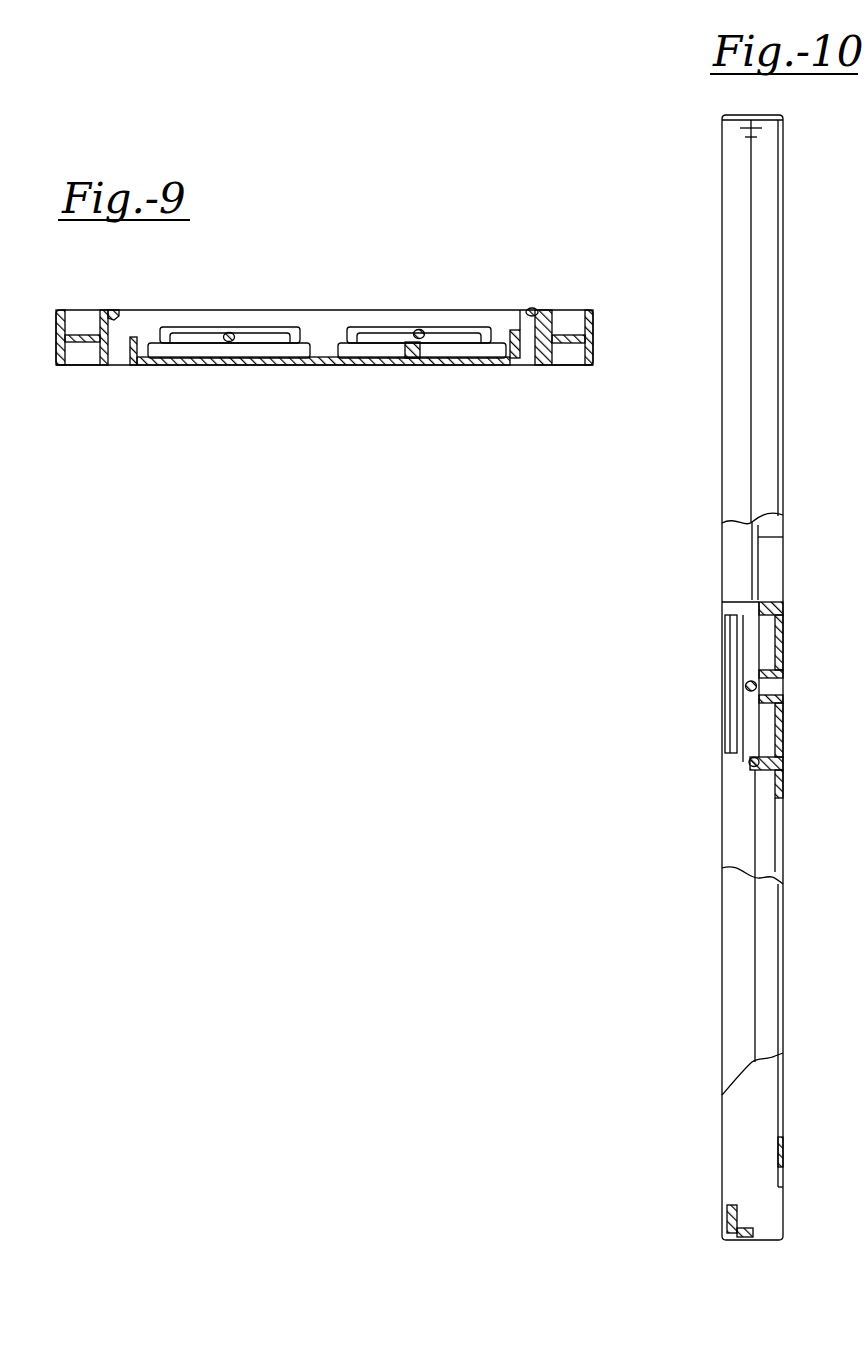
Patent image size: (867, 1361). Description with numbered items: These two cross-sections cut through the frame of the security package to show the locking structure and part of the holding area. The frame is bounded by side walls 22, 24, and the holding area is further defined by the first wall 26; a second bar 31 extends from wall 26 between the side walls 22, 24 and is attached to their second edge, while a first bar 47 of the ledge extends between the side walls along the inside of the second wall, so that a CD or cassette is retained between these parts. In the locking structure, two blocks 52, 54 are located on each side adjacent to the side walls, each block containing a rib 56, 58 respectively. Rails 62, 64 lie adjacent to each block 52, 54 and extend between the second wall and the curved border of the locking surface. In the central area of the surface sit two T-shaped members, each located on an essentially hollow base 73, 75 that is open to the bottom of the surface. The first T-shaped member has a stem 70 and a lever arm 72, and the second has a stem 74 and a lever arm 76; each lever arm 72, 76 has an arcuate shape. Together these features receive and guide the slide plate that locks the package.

In FIG. 9, the side wall 22 is at (57, 346).
In FIG. 9, the side wall 24 is at (593, 348).
In FIG. 10, the first wall 26 is at (766, 1236).
In FIG. 10, the second bar 31 is at (726, 1210).
In FIG. 10, the first bar 47 is at (787, 1157).
In FIG. 9, the block 52 is at (85, 322).
In FIG. 9, the block 54 is at (573, 313).
In FIG. 9, the rib 56 is at (115, 312).
In FIG. 9, the rib 58 is at (534, 308).
In FIG. 9, the rail 62 is at (134, 338).
In FIG. 9, the rail 64 is at (533, 305).
In FIG. 9, the stem 70 is at (233, 336).
In FIG. 9, the lever arm 72 is at (197, 332).
In FIG. 9, the base 73 is at (184, 352).
In FIG. 9, the stem 74 is at (419, 330).
In FIG. 10, the stem 74 is at (746, 732).
In FIG. 9, the base 75 is at (368, 352).
In FIG. 9, the lever arm 76 is at (386, 330).
In FIG. 10, the lever arm 76 is at (746, 686).